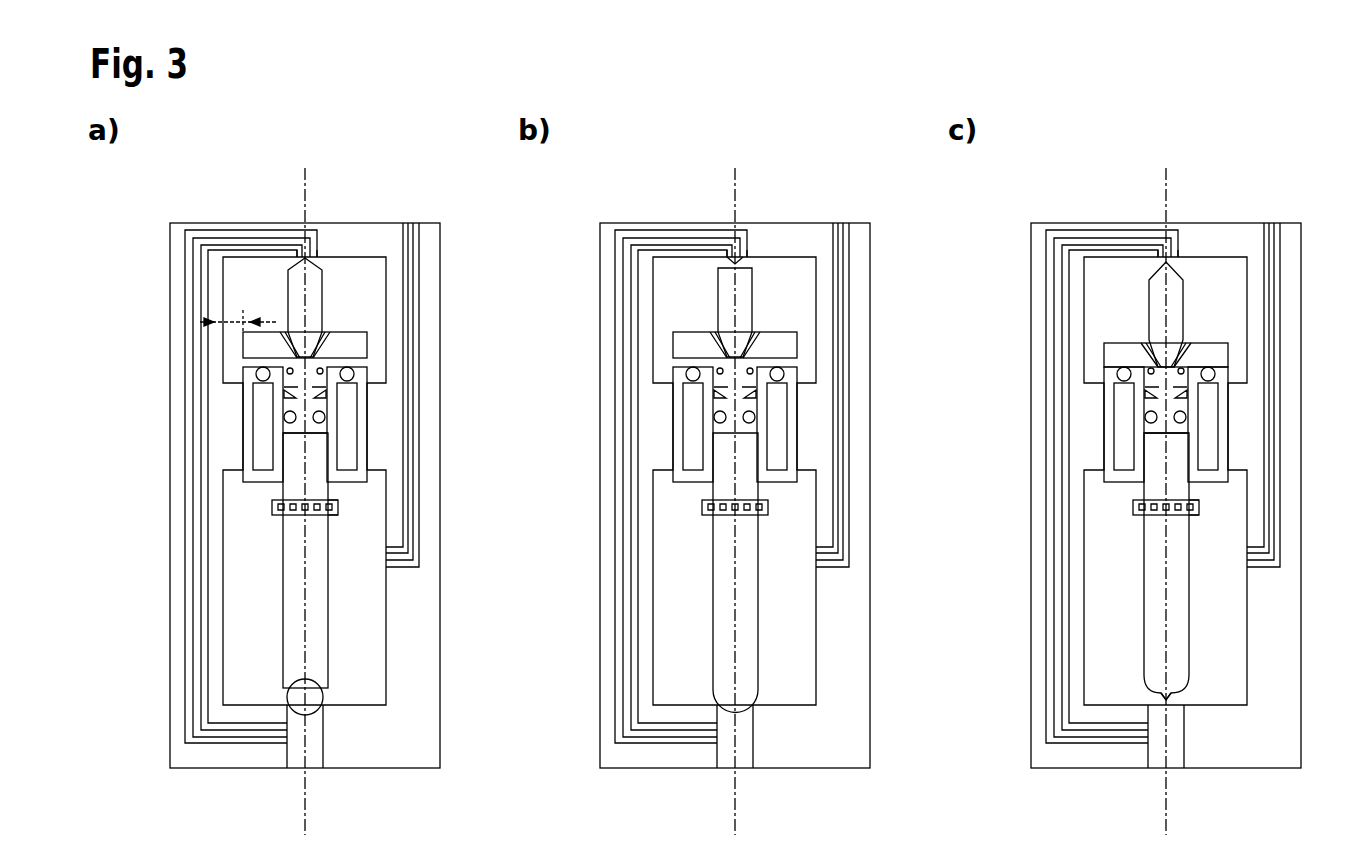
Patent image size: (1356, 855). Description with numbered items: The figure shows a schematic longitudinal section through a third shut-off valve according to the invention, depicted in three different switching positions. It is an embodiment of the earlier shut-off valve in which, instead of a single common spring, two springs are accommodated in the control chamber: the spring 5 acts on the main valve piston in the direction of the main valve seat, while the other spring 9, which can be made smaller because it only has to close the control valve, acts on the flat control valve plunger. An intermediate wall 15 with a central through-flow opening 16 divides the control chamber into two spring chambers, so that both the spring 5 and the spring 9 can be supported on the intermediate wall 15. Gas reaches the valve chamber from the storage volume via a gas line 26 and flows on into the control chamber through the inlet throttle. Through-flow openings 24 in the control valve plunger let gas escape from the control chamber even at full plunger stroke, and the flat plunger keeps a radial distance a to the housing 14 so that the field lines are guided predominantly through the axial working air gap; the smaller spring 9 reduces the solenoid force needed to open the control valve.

The spring 5 is at (288, 420).
The spring 9 is at (323, 373).
The housing 14 is at (378, 236).
The intermediate wall 15 is at (325, 412).
The central through-flow opening 16 is at (282, 370).
The through-flow openings 24 is at (335, 350).
The gas line 26 is at (412, 258).
The radial distance a is at (232, 305).